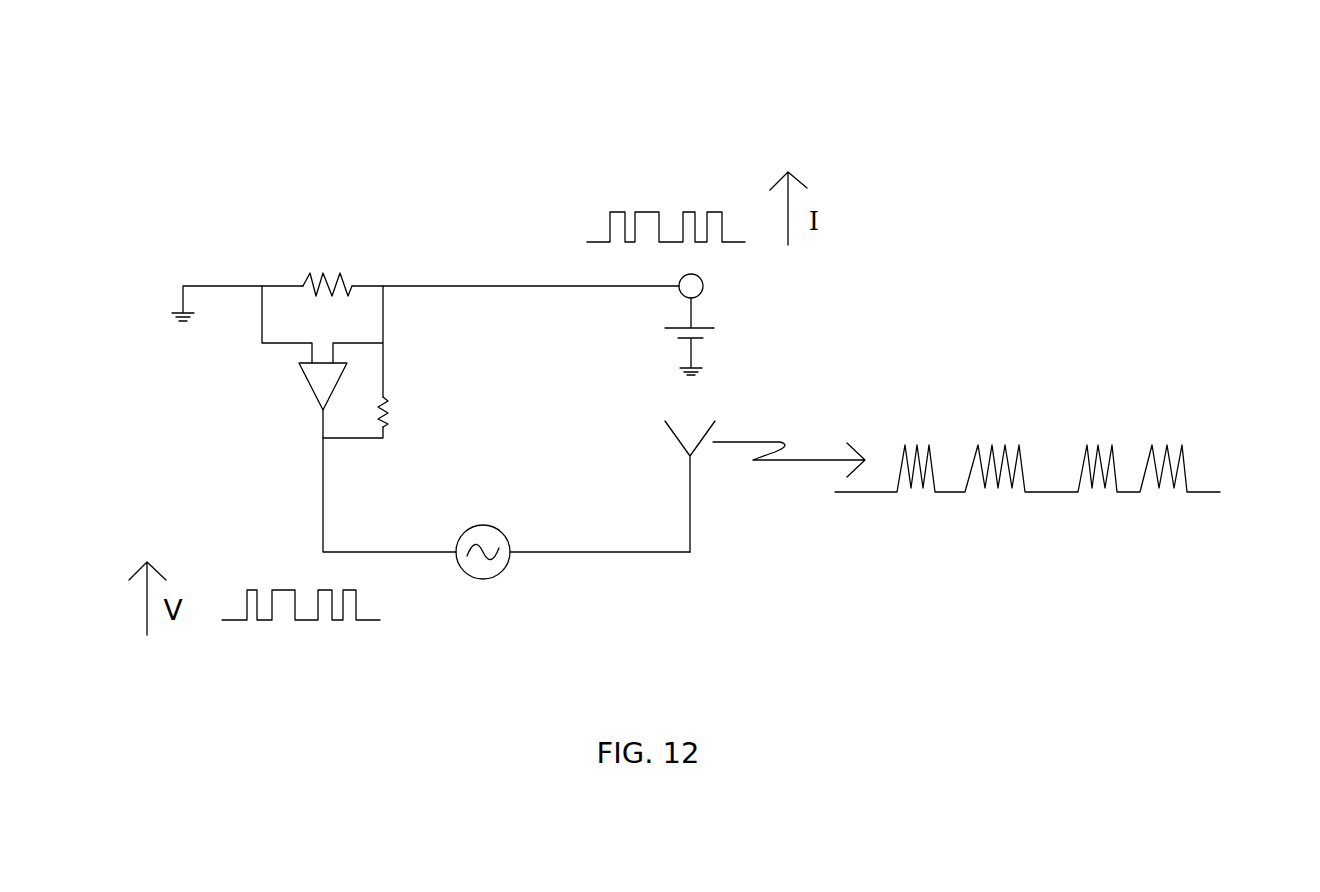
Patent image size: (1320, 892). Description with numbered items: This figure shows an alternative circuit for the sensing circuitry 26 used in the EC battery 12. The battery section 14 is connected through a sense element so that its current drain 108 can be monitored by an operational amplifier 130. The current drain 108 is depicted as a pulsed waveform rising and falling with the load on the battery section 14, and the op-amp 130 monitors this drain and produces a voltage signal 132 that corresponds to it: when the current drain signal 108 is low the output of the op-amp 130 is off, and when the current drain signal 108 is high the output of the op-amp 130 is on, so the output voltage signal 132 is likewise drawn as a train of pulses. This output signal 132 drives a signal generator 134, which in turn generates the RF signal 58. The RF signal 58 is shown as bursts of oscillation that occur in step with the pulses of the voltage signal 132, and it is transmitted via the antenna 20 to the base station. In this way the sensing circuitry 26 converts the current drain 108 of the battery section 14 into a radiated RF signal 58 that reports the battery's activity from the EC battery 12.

The EC battery 12 is at (1225, 190).
The battery section 14 is at (702, 328).
The antenna 20 is at (676, 440).
The sensing circuitry 26 is at (252, 258).
The RF signal 58 is at (988, 448).
The current drain 108 is at (647, 212).
The operational amplifier 130 is at (308, 388).
The voltage signal 132 is at (323, 493).
The signal generator 134 is at (498, 530).